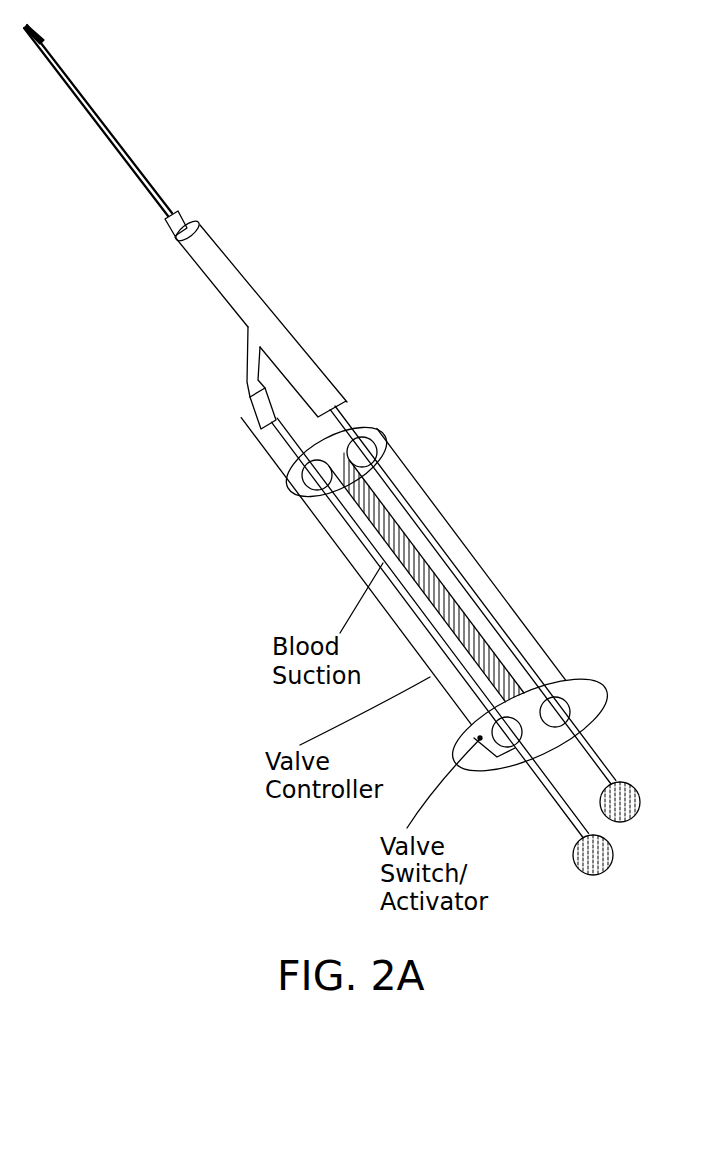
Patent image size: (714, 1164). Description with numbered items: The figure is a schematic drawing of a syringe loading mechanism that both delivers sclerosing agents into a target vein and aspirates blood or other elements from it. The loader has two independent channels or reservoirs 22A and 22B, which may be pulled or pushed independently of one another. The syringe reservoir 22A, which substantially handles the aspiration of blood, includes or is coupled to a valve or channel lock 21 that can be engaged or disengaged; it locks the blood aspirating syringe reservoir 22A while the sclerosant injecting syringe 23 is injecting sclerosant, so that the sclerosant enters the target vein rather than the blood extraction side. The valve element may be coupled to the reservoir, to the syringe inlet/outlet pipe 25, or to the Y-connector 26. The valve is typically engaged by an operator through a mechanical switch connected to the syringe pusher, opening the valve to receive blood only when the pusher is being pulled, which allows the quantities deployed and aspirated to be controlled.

The Y-connector 26 is at (246, 281).
The valve or channel lock 21 is at (259, 413).
The syringe inlet/outlet pipe 25 is at (349, 417).
The syringe reservoir 22A is at (322, 507).
The syringe reservoir 22B is at (485, 600).
The sclerosant injecting syringe 23 is at (600, 760).